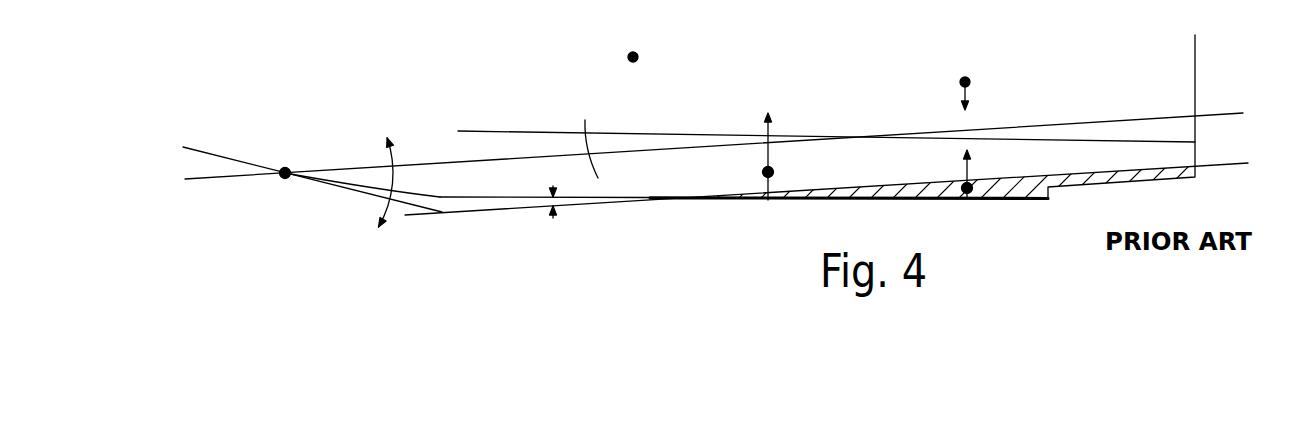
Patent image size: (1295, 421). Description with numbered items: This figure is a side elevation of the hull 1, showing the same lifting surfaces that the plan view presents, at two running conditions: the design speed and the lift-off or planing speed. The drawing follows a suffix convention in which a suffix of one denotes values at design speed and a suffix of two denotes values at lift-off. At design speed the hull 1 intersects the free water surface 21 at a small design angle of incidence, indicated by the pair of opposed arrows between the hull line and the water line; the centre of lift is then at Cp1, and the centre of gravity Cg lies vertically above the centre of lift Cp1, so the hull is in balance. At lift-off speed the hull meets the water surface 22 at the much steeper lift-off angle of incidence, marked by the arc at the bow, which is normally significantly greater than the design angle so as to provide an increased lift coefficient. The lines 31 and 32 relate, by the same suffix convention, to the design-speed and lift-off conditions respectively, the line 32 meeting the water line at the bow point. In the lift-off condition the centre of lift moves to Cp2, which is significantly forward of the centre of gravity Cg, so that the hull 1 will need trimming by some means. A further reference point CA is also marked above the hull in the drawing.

The hull 1 is at (585, 135).
The free water surface 21 is at (447, 213).
The upper tangent line (suction side) 22 is at (714, 131).
The blade profile lower surface (trailing portion) 31 is at (715, 201).
The leading edge point 32 is at (290, 167).
The centre of lift at design speed Cp1 is at (967, 197).
The centre of lift at lift-off speed Cp2 is at (768, 200).
The centre of gravity Cg is at (978, 89).
The aerodynamic center CA is at (638, 55).